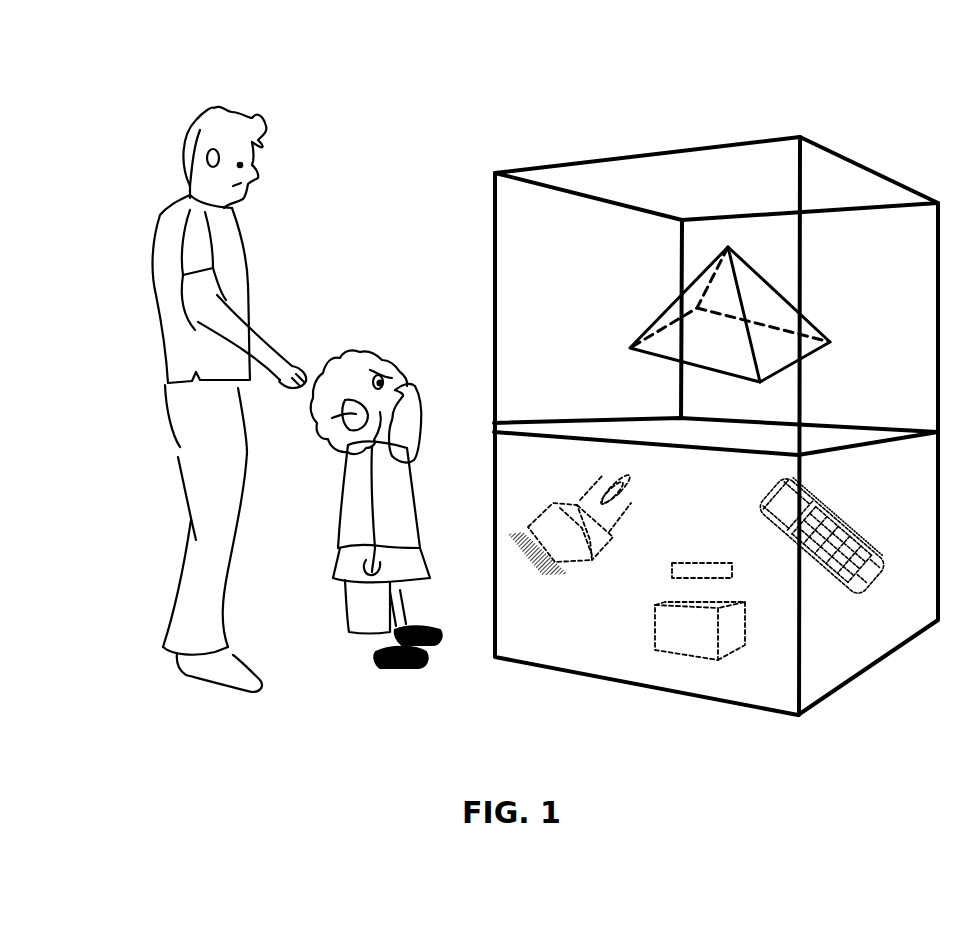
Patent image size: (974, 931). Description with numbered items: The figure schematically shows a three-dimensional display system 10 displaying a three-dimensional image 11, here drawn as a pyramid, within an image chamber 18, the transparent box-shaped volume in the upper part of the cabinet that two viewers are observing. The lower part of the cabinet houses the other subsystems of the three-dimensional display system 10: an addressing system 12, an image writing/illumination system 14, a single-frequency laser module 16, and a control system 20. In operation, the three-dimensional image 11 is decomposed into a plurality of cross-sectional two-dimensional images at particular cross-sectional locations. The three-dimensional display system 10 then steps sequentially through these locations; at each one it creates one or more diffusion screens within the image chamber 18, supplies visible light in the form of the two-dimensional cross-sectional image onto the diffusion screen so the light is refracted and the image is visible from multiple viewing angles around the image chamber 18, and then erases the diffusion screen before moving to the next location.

The three-dimensional display system 10 is at (862, 70).
The 3-D image 11 is at (650, 270).
The addressing system 12 is at (554, 504).
The image writing/illumination system 14 is at (838, 592).
The single-frequency laser module 16 is at (698, 564).
The image chamber 18 is at (895, 181).
The control system 20 is at (655, 628).